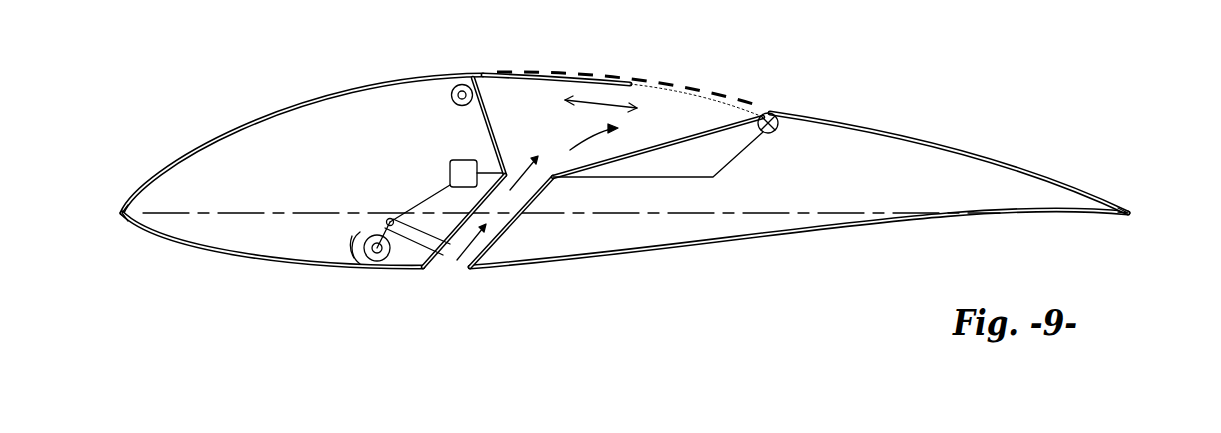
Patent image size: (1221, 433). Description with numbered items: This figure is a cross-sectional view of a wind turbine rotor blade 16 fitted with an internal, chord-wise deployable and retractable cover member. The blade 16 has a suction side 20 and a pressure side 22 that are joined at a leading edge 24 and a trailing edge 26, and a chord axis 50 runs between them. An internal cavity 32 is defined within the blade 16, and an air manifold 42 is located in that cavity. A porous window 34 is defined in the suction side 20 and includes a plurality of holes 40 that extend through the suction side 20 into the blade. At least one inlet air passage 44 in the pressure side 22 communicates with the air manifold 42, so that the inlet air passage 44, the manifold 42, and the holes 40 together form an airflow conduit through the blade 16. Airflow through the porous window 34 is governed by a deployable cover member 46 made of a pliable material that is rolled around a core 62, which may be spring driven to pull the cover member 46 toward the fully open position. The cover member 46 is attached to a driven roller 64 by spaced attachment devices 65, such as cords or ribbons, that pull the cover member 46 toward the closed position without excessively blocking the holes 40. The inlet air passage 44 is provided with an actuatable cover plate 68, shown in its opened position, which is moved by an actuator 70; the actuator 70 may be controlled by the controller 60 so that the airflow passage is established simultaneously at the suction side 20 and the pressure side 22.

The wind turbine rotor blade 16 is at (618, 165).
The suction side 20 is at (367, 82).
The pressure side 22 is at (230, 258).
The leading edge 24 is at (121, 213).
The trailing edge 26 is at (1130, 213).
The internal cavity 32 is at (820, 138).
The porous window 34 is at (617, 58).
The holes 40 is at (575, 70).
The air manifold 42 is at (612, 162).
The inlet air passage 44 is at (456, 267).
The deployable cover member 46 is at (528, 82).
The chord axis 50 is at (188, 213).
The controller 60 is at (458, 160).
The core 62 is at (452, 97).
The driven roller 64 is at (762, 136).
The attachment devices 65 is at (707, 100).
The cover plate 68 is at (448, 262).
The actuator 70 is at (368, 227).